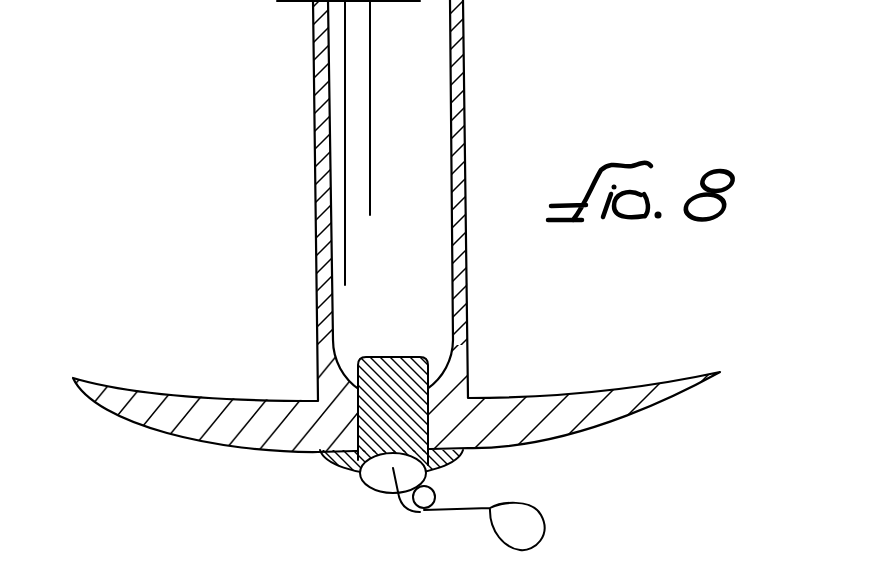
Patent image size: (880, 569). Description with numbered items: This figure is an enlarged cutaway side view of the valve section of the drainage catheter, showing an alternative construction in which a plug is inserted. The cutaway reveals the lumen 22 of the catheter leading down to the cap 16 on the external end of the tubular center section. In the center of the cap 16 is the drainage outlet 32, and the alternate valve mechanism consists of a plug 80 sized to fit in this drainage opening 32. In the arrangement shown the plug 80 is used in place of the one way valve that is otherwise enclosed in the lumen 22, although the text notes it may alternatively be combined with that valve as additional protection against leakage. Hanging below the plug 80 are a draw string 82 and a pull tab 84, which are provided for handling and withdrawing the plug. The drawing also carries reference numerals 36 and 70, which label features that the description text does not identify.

The cap 16 is at (582, 435).
The lumen 22 is at (393, 88).
The drainage outlet 32 is at (355, 400).
The tube wall 36 is at (498, 398).
The upper housing 70 is at (182, 0).
The plug 80 is at (390, 385).
The draw string 82 is at (543, 518).
The pull tab 84 is at (370, 480).